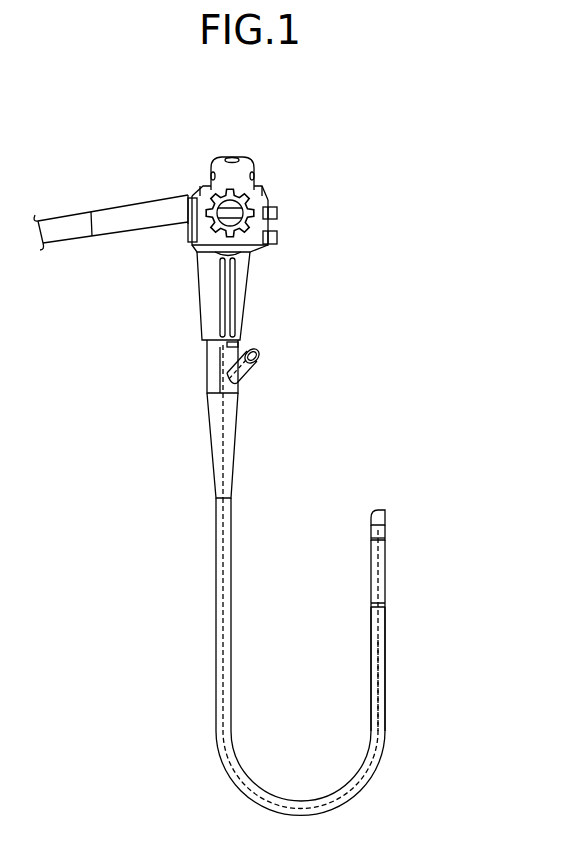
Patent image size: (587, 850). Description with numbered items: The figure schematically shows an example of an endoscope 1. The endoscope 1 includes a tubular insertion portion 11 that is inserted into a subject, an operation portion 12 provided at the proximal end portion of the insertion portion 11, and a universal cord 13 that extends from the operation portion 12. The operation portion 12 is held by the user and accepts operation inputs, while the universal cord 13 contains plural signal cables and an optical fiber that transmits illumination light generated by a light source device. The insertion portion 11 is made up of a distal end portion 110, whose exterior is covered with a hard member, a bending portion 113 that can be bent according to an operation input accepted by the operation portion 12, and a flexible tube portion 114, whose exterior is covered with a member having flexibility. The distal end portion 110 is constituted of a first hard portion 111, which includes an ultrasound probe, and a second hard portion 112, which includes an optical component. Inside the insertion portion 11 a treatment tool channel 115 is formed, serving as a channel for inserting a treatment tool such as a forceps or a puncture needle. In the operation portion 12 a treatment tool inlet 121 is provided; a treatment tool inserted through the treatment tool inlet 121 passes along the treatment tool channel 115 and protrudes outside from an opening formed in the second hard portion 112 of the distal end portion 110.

The endoscope 1 is at (345, 142).
The insertion portion 11 is at (283, 790).
The operation portion 12 is at (320, 237).
The universal cord 13 is at (58, 227).
The distal end portion 110 is at (301, 503).
The first hard portion 111 is at (373, 515).
The second hard portion 112 is at (372, 532).
The bending portion 113 is at (386, 577).
The flexible tube portion 114 is at (386, 650).
The treatment tool channel 115 is at (383, 691).
The treatment tool inlet 121 is at (250, 368).